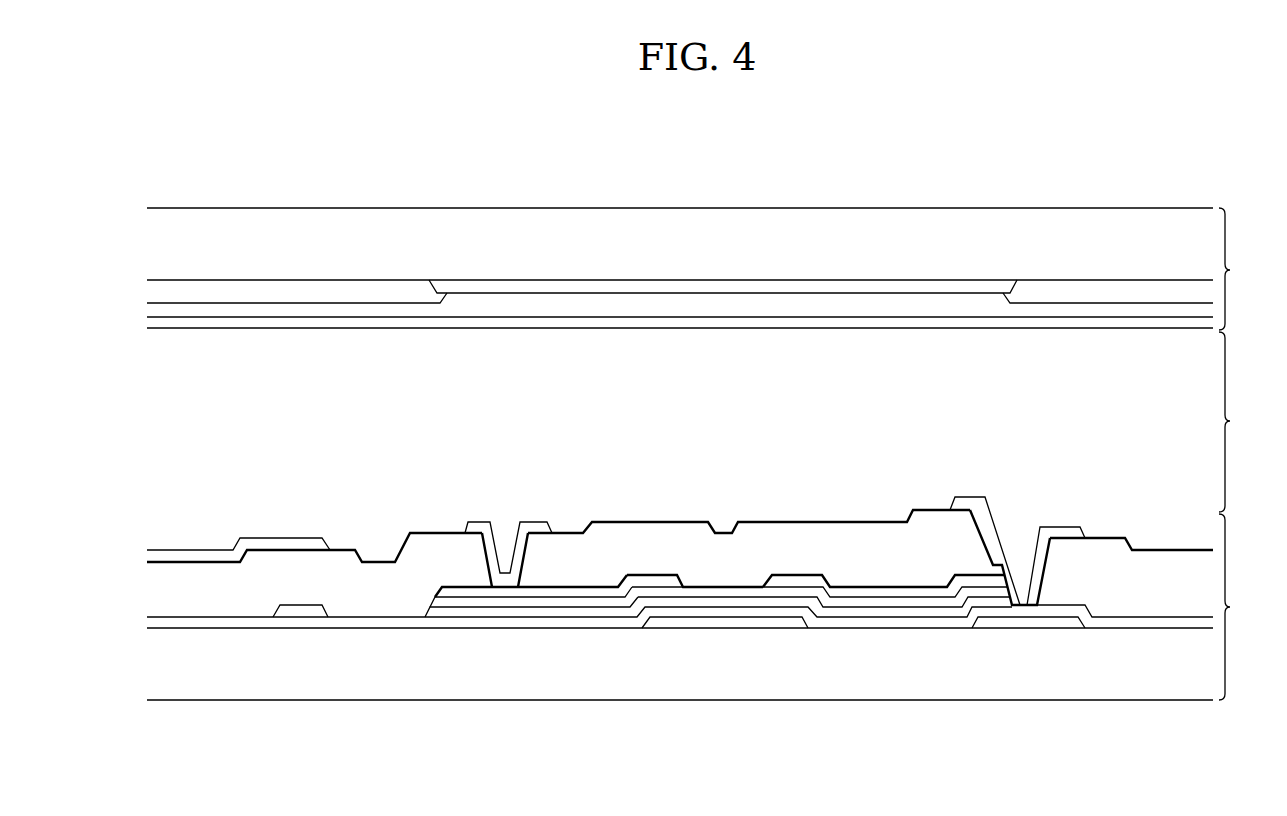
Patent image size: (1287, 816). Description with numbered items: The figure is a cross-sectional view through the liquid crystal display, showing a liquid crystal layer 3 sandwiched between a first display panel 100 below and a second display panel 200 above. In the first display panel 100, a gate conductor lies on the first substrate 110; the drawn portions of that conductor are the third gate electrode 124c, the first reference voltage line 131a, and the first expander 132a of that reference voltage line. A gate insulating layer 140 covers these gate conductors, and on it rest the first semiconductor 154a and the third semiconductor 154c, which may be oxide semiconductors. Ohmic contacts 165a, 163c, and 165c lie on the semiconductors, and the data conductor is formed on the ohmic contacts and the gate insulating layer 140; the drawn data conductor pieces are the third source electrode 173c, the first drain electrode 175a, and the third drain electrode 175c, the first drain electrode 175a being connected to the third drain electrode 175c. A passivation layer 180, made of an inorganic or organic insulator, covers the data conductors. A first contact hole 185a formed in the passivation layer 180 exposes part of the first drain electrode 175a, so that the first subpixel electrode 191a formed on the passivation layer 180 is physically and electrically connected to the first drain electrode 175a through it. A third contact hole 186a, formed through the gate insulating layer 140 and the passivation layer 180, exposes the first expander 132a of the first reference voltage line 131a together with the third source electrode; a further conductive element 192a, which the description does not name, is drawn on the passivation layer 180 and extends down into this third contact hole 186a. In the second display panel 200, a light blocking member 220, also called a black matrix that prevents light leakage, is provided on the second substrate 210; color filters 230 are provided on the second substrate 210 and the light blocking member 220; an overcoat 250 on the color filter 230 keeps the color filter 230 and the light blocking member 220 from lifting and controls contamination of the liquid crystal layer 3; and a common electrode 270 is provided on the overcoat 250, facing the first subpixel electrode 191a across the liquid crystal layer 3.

The liquid crystal layer 3 is at (1236, 422).
The first display panel 100 is at (1247, 607).
The first substrate 110 is at (1083, 670).
The third gate electrode 124c is at (725, 630).
The first reference voltage line 131a is at (298, 619).
The first expander 132a is at (1013, 630).
The gate insulating layer 140 is at (1153, 630).
The first semiconductor 154a is at (455, 609).
The third semiconductor 154c is at (788, 599).
The ohmic contact 163c is at (868, 619).
The ohmic contact 165a is at (520, 599).
The ohmic contact 165c is at (660, 599).
The third source electrode 173c is at (866, 586).
The first drain electrode 175a is at (455, 586).
The third drain electrode 175c is at (650, 574).
The passivation layer 180 is at (797, 543).
The first contact hole 185a is at (485, 553).
The third contact hole 186a is at (1030, 560).
The first subpixel electrode 191a is at (265, 545).
The pixel electrode (contact assistant) 192a is at (963, 496).
The second display panel 200 is at (711, 269).
The second substrate 210 is at (905, 242).
The light blocking member 220 is at (697, 289).
The color filter 230 is at (375, 291).
The overcoat 250 is at (487, 299).
The common electrode 270 is at (600, 325).